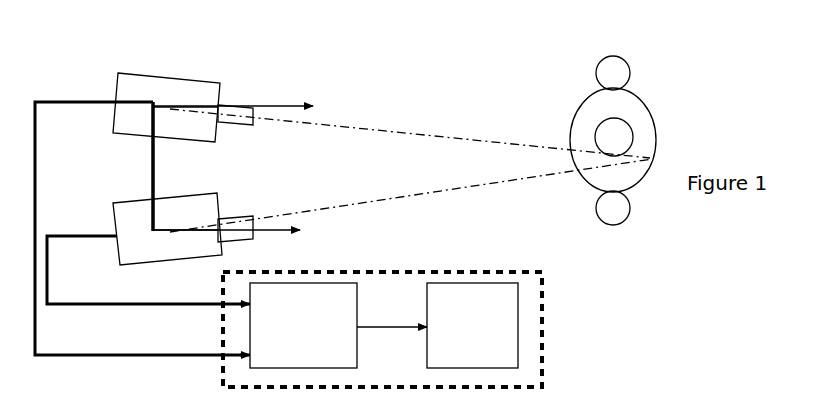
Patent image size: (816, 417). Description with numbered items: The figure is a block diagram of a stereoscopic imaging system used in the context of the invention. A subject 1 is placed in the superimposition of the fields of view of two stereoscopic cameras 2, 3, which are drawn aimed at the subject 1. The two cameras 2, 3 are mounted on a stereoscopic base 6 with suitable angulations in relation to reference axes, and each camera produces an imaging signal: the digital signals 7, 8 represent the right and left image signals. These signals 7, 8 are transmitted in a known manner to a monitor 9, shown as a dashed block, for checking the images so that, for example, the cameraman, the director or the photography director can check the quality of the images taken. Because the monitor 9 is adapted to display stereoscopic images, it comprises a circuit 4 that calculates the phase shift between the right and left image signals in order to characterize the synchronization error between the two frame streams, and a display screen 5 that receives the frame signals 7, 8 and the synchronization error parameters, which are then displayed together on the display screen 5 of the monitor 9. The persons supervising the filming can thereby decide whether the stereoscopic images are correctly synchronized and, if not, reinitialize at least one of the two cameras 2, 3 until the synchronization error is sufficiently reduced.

The subject 1 is at (653, 112).
The stereoscopic camera 2 is at (175, 85).
The stereoscopic camera 3 is at (165, 252).
The circuit 4 is at (337, 290).
The display screen 5 is at (477, 283).
The stereoscopic base 6 is at (153, 168).
The imaging signal 7 is at (72, 103).
The imaging signal 8 is at (88, 237).
The monitor 9 is at (545, 282).